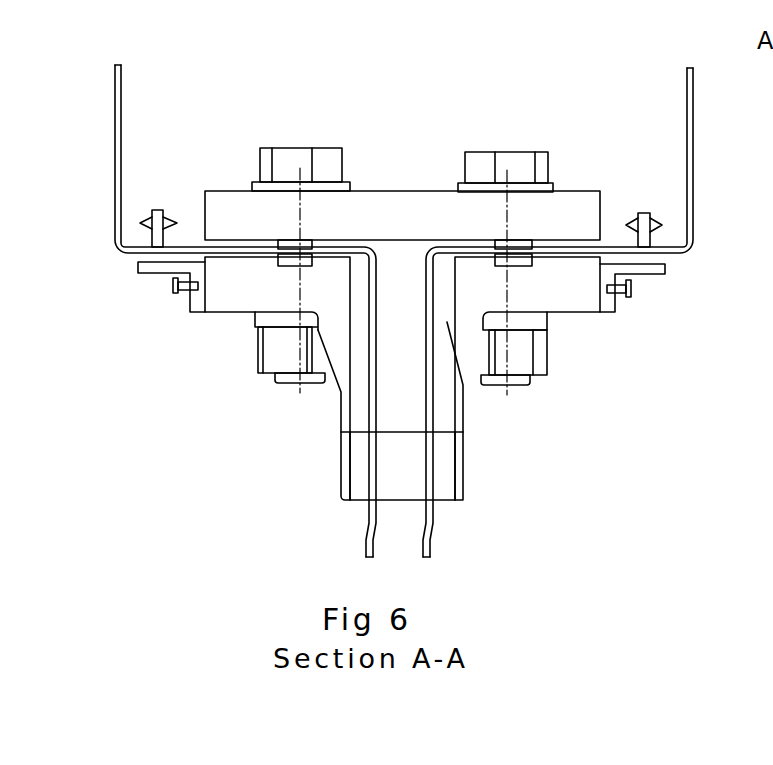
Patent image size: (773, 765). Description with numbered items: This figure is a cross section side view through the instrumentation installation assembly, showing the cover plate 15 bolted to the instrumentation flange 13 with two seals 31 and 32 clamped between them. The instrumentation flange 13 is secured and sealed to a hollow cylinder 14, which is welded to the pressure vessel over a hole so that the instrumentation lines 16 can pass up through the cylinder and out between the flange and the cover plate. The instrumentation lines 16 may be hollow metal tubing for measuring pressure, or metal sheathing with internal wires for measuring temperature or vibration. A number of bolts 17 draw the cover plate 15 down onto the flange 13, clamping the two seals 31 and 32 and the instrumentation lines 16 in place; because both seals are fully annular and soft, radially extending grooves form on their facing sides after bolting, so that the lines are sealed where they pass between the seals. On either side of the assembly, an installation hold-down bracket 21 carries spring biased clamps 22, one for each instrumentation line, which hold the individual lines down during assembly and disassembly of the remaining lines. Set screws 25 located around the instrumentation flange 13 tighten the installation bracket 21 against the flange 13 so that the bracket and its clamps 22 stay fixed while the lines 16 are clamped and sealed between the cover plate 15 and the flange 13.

The instrumentation flange 13 is at (233, 287).
The hollow cylinder 14 is at (443, 467).
The cover plate 15 is at (383, 218).
The instrumentation lines 16 is at (122, 130).
The bolts 17 is at (287, 163).
The installation hold-down bracket 21 is at (153, 267).
The spring biased clamps 22 is at (158, 217).
The set screws 25 is at (175, 292).
The seal 31 is at (520, 245).
The seal 32 is at (519, 259).